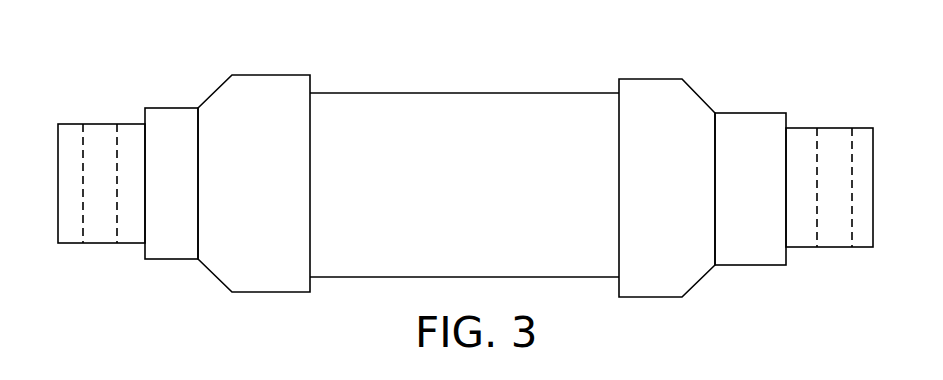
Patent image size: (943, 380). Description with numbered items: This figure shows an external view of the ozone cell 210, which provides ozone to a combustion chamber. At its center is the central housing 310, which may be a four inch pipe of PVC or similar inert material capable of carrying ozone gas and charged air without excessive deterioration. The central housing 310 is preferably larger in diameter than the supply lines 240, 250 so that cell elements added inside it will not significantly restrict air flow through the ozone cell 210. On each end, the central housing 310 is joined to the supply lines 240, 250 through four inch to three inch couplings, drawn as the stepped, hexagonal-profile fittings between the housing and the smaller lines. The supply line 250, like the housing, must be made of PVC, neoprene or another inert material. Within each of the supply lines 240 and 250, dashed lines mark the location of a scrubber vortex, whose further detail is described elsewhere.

The ozone cell 210 is at (536, 75).
The supply line 240 is at (72, 124).
The supply line 250 is at (804, 128).
The central housing 310 is at (408, 92).